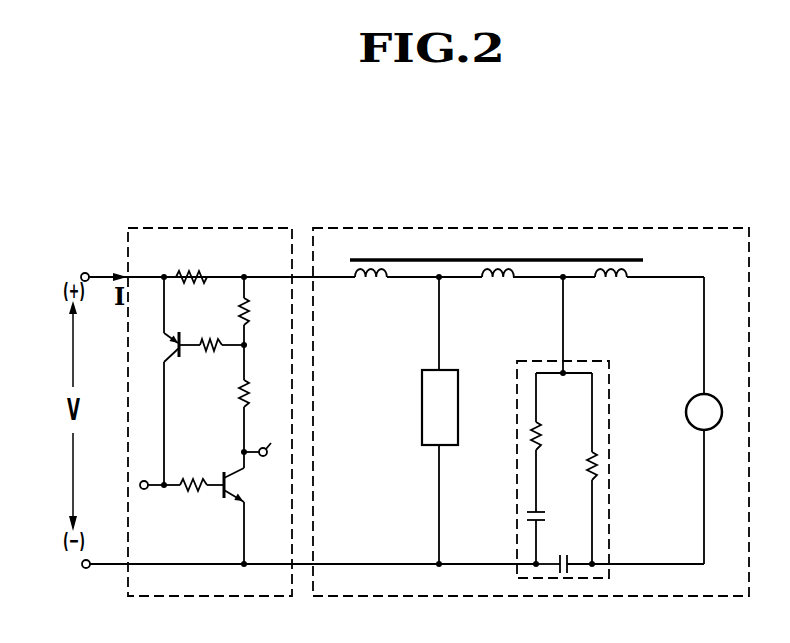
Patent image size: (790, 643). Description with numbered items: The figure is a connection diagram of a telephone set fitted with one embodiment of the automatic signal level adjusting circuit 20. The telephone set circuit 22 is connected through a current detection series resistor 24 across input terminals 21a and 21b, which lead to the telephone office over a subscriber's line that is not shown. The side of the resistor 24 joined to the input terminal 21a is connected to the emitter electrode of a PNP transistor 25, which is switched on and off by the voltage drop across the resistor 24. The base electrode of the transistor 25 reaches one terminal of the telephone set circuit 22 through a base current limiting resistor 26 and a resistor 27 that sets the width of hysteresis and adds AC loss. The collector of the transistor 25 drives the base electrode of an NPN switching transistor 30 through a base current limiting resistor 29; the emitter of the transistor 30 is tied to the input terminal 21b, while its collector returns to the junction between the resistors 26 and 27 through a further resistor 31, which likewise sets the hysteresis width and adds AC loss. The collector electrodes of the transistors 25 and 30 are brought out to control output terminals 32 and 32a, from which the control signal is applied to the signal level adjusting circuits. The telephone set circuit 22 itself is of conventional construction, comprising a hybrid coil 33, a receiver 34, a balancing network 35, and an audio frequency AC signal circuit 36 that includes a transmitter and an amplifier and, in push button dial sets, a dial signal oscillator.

The automatic signal level adjusting circuit 20 is at (180, 228).
The telephone set circuit 22 is at (372, 228).
The input terminal 21a is at (93, 261).
The input terminal 21b is at (93, 581).
The current detection series resistor 24 is at (193, 273).
The PNP transistor 25 is at (171, 344).
The base current limiting resistor 26 is at (222, 360).
The resistor for setting hysteresis width and adding AC loss 27 is at (246, 298).
The base current limiting resistor 29 is at (202, 500).
The NPN switching transistor 30 is at (244, 484).
The resistor for setting hysteresis width and adding AC loss 31 is at (246, 382).
The control output terminal 32 is at (158, 469).
The control output terminal 32a is at (264, 433).
The hybrid coil 33 is at (596, 259).
The receiver 34 is at (717, 397).
The balancing network 35 is at (596, 361).
The audio frequency AC signal circuit 36 is at (440, 407).